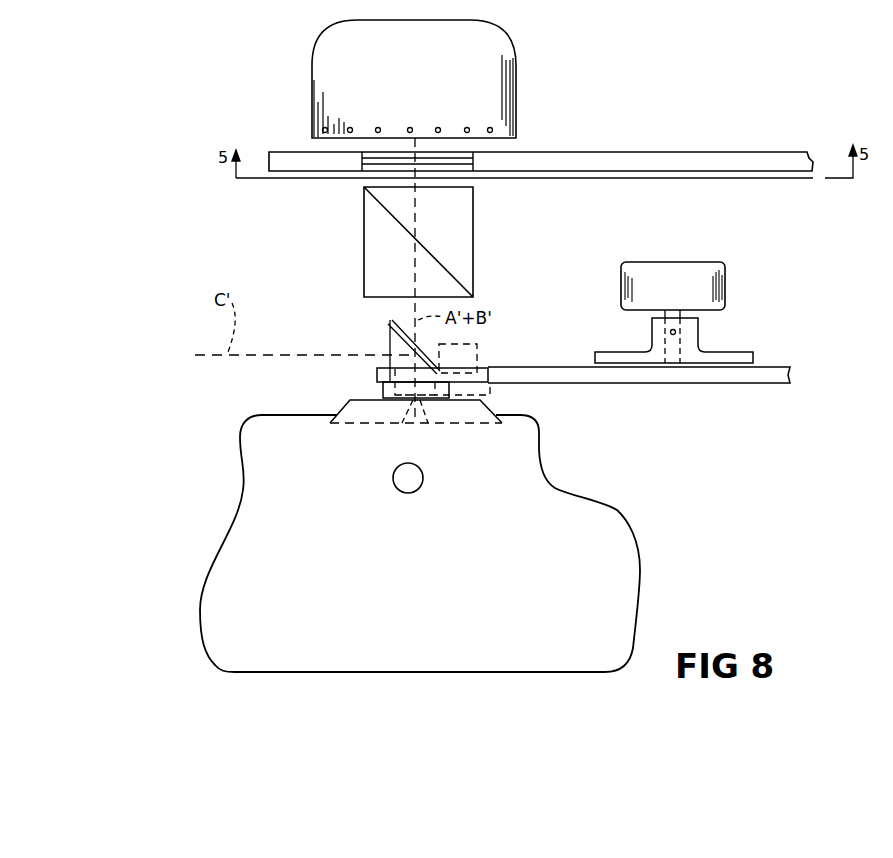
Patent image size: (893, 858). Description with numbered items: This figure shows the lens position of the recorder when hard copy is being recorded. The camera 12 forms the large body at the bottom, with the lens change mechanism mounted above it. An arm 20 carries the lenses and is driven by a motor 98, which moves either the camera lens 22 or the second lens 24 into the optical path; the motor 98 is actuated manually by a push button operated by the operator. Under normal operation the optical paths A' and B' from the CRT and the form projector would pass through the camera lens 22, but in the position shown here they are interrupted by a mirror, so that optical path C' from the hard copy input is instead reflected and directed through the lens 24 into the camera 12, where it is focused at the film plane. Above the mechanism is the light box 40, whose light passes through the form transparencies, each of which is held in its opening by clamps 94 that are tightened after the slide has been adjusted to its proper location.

The camera 12 is at (635, 560).
The arm 20 is at (585, 383).
The camera lens 22 is at (477, 345).
The second lens 24 is at (392, 358).
The light box 40 is at (495, 84).
The clamp 94 is at (373, 158).
The motor 98 is at (663, 262).